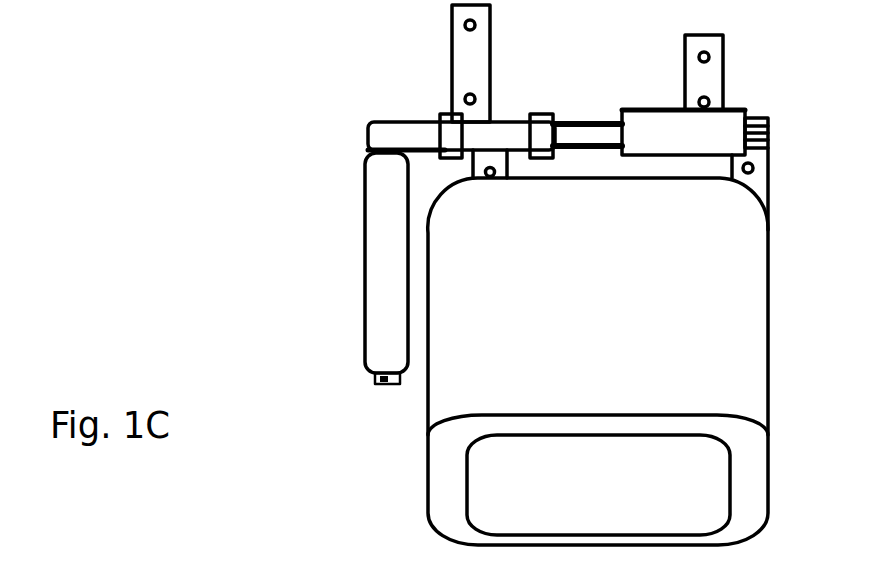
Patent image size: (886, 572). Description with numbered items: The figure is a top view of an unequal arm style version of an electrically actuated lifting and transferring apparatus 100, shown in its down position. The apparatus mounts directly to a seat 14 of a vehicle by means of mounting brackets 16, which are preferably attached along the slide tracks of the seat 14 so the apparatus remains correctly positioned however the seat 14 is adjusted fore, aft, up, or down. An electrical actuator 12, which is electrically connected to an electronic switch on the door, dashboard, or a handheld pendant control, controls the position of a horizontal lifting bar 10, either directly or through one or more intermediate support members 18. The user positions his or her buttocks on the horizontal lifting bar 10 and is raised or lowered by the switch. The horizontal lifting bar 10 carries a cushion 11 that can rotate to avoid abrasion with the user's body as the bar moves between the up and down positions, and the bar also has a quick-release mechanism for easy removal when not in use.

The electrically actuated lifting and transferring apparatus 100 is at (172, 244).
The horizontal lifting bar 10 is at (378, 383).
The cushion 11 is at (390, 298).
The electrical actuator 12 is at (722, 128).
The seat 14 is at (482, 382).
The mounting brackets 16 is at (487, 158).
The intermediate support members 18 is at (435, 135).